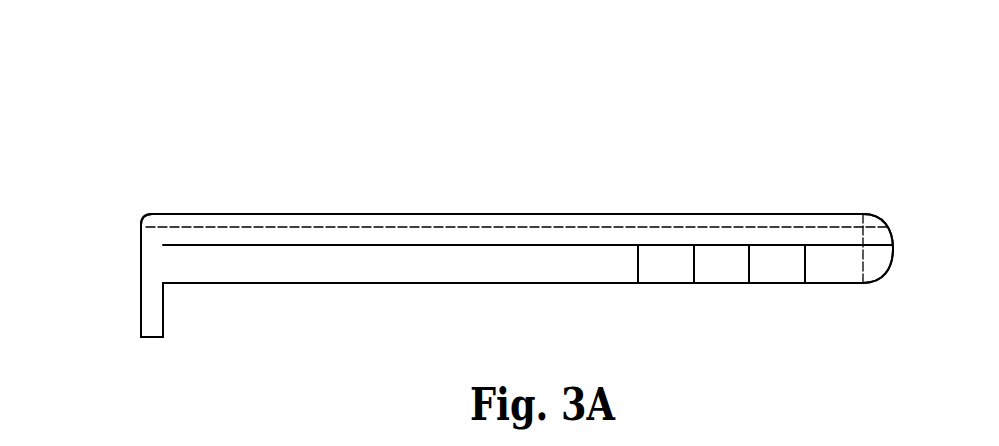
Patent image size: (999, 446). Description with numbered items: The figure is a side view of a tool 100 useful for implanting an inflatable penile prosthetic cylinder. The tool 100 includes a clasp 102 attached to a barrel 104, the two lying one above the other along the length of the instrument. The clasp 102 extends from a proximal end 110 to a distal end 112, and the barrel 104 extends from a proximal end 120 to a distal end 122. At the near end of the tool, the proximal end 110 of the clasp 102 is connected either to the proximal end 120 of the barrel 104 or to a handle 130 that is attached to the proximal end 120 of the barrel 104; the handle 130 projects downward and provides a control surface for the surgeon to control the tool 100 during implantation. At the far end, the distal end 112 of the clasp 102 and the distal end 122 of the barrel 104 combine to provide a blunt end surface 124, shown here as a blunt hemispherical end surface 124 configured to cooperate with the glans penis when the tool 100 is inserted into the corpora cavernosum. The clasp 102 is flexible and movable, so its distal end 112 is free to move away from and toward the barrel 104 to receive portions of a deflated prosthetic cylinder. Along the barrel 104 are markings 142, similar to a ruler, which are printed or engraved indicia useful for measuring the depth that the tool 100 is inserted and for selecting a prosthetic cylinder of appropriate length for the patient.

The tool 100 is at (650, 132).
The clasp 102 is at (373, 236).
The barrel 104 is at (375, 268).
The proximal end of the clasp 110 is at (143, 222).
The distal end of the clasp 112 is at (893, 243).
The proximal end of the barrel 120 is at (218, 133).
The distal end of the barrel 122 is at (893, 258).
The blunt end surface 124 is at (890, 262).
The handle 130 is at (149, 256).
The markings 142 is at (694, 268).